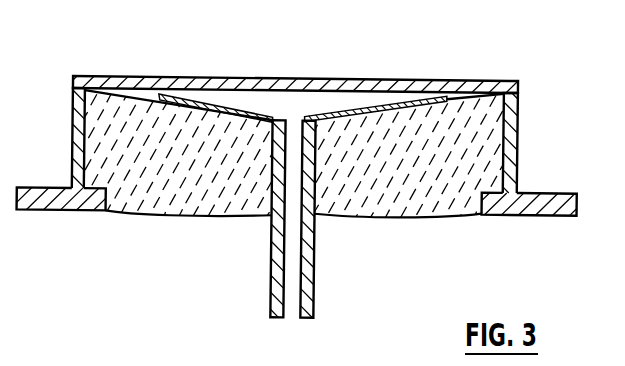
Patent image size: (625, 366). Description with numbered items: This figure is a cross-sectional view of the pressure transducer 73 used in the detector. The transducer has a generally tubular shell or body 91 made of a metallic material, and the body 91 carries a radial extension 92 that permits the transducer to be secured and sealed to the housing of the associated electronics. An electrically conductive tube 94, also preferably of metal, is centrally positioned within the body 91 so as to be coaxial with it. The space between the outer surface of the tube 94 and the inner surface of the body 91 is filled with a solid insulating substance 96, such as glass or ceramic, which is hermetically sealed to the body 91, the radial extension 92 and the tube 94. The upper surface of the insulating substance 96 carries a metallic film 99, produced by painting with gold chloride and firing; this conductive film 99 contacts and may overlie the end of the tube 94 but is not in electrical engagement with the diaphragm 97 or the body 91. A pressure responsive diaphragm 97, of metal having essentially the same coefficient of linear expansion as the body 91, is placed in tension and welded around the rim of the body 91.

The pressure transducer 73 is at (295, 50).
The pressure responsive diaphragm 97 is at (163, 77).
The metallic film 99 is at (358, 107).
The tubular shell or body 91 is at (519, 146).
The radial extension 92 is at (558, 194).
The solid insulating substance 96 is at (430, 218).
The electrically conductive tube 94 is at (316, 262).